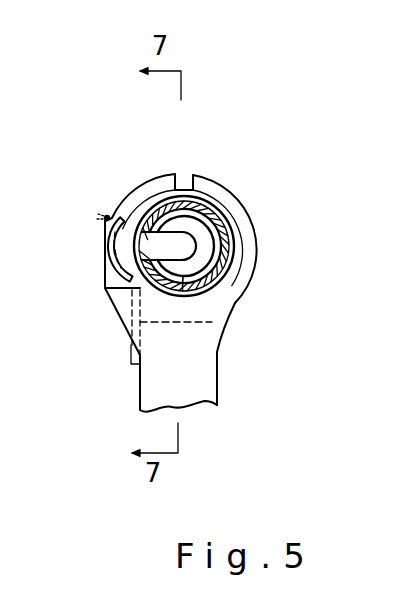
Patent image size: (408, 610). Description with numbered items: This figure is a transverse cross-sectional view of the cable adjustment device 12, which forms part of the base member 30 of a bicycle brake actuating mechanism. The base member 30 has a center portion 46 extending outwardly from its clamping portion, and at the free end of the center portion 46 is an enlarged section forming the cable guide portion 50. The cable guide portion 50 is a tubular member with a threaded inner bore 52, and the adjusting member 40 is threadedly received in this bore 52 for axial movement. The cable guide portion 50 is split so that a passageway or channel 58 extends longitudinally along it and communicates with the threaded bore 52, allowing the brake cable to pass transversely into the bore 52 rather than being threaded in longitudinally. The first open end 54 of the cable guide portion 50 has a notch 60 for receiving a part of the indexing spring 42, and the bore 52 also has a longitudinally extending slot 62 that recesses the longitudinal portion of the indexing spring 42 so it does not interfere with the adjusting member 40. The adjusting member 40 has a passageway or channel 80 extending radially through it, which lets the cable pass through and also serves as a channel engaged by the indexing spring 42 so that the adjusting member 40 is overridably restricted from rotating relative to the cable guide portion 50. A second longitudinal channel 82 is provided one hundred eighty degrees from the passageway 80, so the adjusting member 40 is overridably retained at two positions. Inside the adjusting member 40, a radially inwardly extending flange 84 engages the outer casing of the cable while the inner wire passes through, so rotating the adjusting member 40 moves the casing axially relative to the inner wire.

The cable adjustment device 12 is at (76, 248).
The base member 30 is at (140, 390).
The adjusting member 40 is at (218, 197).
The indexing spring 42 is at (104, 216).
The center portion 46 is at (200, 387).
The cable guide portion 50 is at (143, 183).
The threaded inner bore 52 is at (210, 292).
The first open end 54 is at (236, 214).
The passageway or channel 58 is at (184, 178).
The notch 60 is at (101, 279).
The longitudinally extending slot 62 is at (118, 306).
The passageway or channel 80 is at (132, 202).
The longitudinal channel 82 is at (234, 240).
The radially inwardly extending flange 84 is at (193, 301).